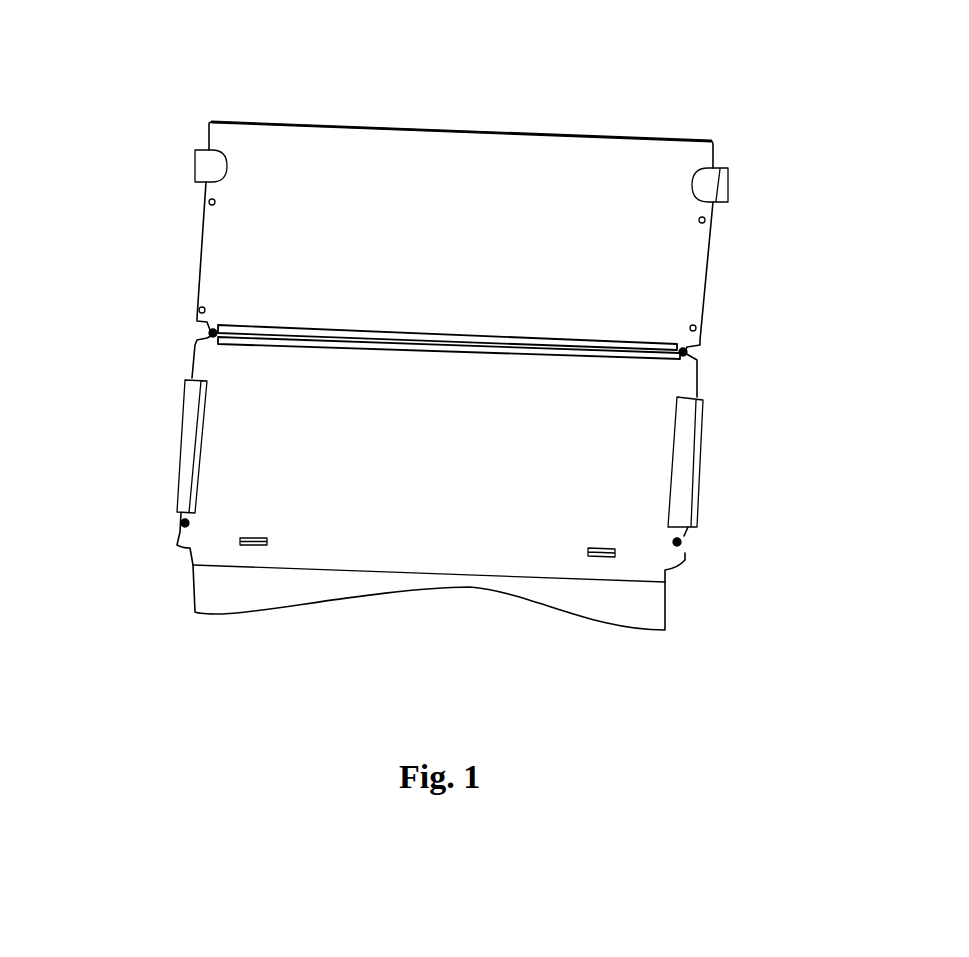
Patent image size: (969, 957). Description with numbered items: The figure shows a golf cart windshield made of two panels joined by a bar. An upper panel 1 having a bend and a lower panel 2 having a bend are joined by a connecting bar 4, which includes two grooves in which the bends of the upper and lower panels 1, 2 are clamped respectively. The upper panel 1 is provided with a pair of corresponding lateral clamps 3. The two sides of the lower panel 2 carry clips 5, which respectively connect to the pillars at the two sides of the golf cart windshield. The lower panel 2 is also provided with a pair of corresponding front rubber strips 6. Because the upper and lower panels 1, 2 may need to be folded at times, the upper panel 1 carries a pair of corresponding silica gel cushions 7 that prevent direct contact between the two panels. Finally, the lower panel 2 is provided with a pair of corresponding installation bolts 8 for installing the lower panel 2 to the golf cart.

The upper panel 1 is at (437, 197).
The lower panel 2 is at (228, 368).
The lateral clamp 3 is at (710, 182).
The connecting bar 4 is at (787, 380).
The clip 5 is at (752, 517).
The front rubber strip 6 is at (703, 608).
The silica gel cushion 7 is at (810, 305).
The installation bolt 8 is at (733, 578).